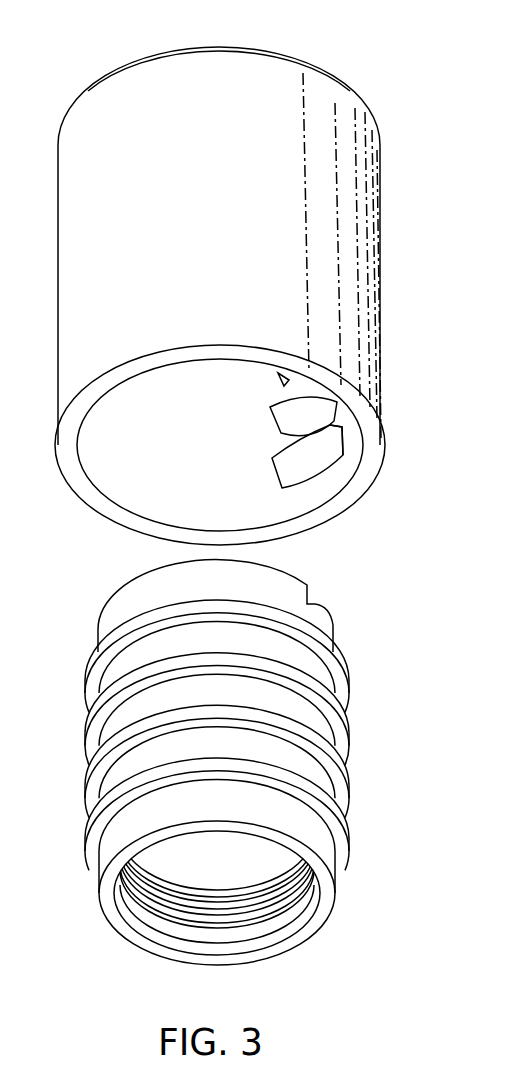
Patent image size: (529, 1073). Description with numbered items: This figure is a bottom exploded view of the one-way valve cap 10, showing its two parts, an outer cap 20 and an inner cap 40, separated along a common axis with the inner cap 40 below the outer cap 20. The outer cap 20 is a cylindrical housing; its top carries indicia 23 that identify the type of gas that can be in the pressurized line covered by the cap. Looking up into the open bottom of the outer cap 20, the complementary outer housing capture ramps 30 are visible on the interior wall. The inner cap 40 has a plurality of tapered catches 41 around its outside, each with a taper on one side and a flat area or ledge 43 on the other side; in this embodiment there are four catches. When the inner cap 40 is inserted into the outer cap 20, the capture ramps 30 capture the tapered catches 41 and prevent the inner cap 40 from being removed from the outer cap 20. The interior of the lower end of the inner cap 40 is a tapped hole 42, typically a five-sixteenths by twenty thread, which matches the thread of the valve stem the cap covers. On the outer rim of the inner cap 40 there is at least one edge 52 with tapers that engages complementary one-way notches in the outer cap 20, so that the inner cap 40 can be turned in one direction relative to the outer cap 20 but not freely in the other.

The connector assembly 10 is at (190, 255).
The outer cap 20 is at (192, 298).
The indicia 23 is at (190, 96).
The outer housing capture ramps 30 is at (277, 427).
The inner cap 40 is at (193, 778).
The tapered catches 41 is at (85, 792).
The tapped hole 42 is at (192, 928).
The ledge 43 is at (93, 842).
The edge 52 is at (310, 588).